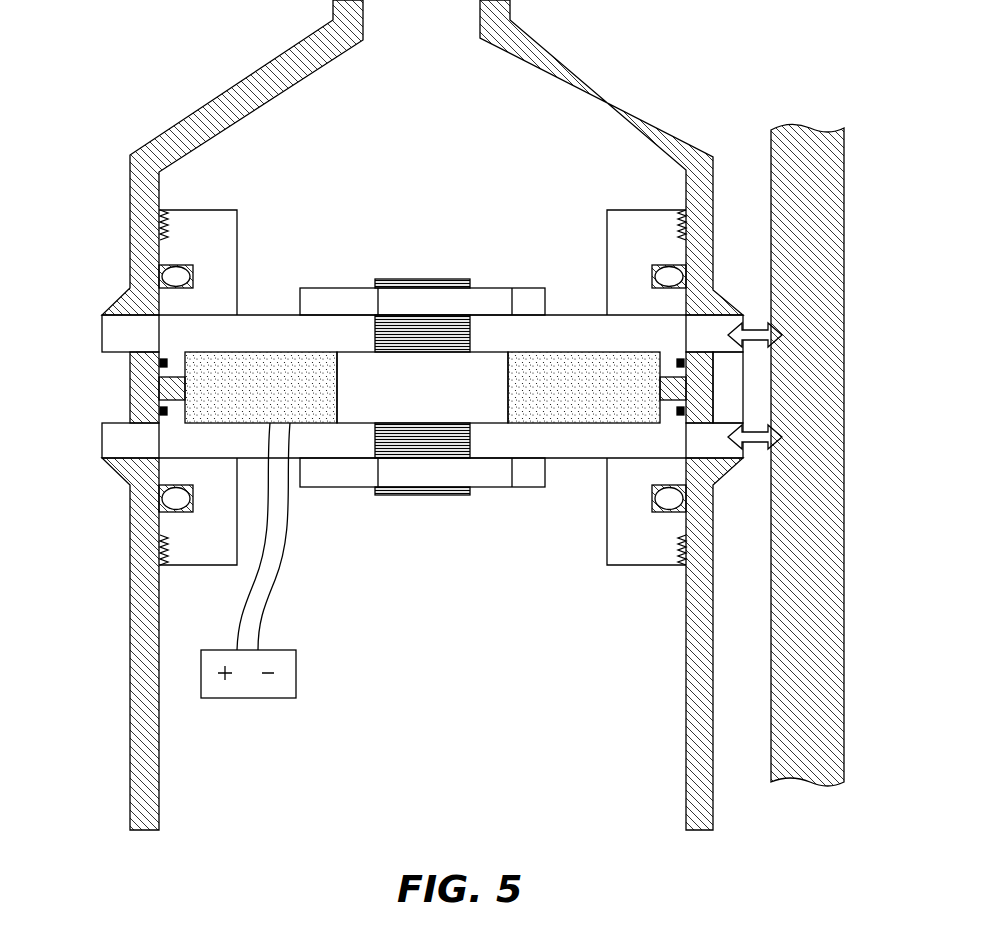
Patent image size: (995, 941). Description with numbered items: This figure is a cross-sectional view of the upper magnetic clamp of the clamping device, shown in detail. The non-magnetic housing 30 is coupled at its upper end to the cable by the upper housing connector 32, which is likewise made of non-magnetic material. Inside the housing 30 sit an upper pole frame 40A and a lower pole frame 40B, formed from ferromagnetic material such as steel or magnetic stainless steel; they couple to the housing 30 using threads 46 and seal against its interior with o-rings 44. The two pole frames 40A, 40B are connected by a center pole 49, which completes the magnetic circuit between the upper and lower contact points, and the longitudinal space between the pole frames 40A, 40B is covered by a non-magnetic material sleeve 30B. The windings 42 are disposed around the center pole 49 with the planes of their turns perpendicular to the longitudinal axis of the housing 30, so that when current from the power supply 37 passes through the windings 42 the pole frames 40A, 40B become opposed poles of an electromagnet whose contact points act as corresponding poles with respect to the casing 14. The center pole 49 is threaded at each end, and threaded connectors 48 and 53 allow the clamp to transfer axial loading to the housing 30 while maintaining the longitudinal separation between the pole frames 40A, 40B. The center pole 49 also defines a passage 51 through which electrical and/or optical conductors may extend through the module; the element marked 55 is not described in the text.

The casing 14 is at (845, 395).
The housing 30 is at (130, 678).
The non-magnetic material sleeve 30B is at (130, 400).
The upper housing connector 32 is at (257, 68).
The power supply 37 is at (247, 690).
The upper pole frame 40A is at (200, 210).
The lower pole frame 40B is at (197, 568).
The windings 42 is at (263, 373).
The o-rings 44 is at (162, 280).
The threads 46 is at (160, 558).
The threaded connector 48 is at (346, 288).
The center pole 49 is at (422, 279).
The passage 51 is at (482, 375).
The threaded connector 53 is at (355, 478).
The shaft 55 is at (423, 407).